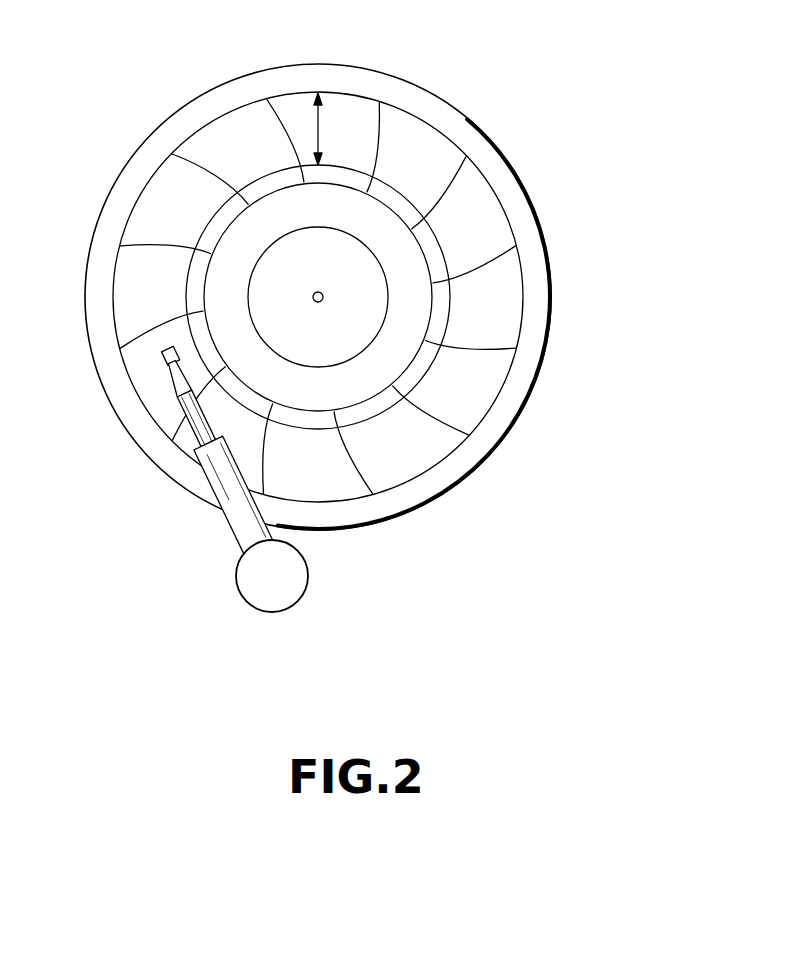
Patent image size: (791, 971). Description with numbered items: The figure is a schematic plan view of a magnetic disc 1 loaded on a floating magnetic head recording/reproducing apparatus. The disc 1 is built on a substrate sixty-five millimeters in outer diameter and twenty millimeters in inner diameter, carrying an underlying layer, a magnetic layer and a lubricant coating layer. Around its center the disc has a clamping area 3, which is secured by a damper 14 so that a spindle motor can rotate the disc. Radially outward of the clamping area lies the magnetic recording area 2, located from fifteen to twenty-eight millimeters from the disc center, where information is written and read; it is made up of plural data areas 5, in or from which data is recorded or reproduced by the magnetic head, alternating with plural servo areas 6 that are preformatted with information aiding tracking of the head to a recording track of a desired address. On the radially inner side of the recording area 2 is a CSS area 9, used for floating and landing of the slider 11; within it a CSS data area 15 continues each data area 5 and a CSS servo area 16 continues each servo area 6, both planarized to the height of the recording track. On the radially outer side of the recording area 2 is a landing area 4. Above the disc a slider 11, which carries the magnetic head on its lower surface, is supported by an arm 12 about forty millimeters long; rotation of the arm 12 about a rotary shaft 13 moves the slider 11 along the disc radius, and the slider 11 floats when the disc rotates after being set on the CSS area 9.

The magnetic disc 1 is at (596, 220).
The magnetic recording area 2 is at (322, 130).
The clamping area 3 is at (353, 385).
The landing area 4 is at (505, 412).
The data area 5 is at (160, 204).
The servo area 6 is at (157, 323).
The CSS area 9 is at (336, 224).
The slider 11 is at (160, 355).
The arm 12 is at (228, 498).
The rotary shaft 13 is at (290, 573).
The damper 14 is at (360, 290).
The CSS data area 15 is at (267, 180).
The CSS servo area 16 is at (248, 193).